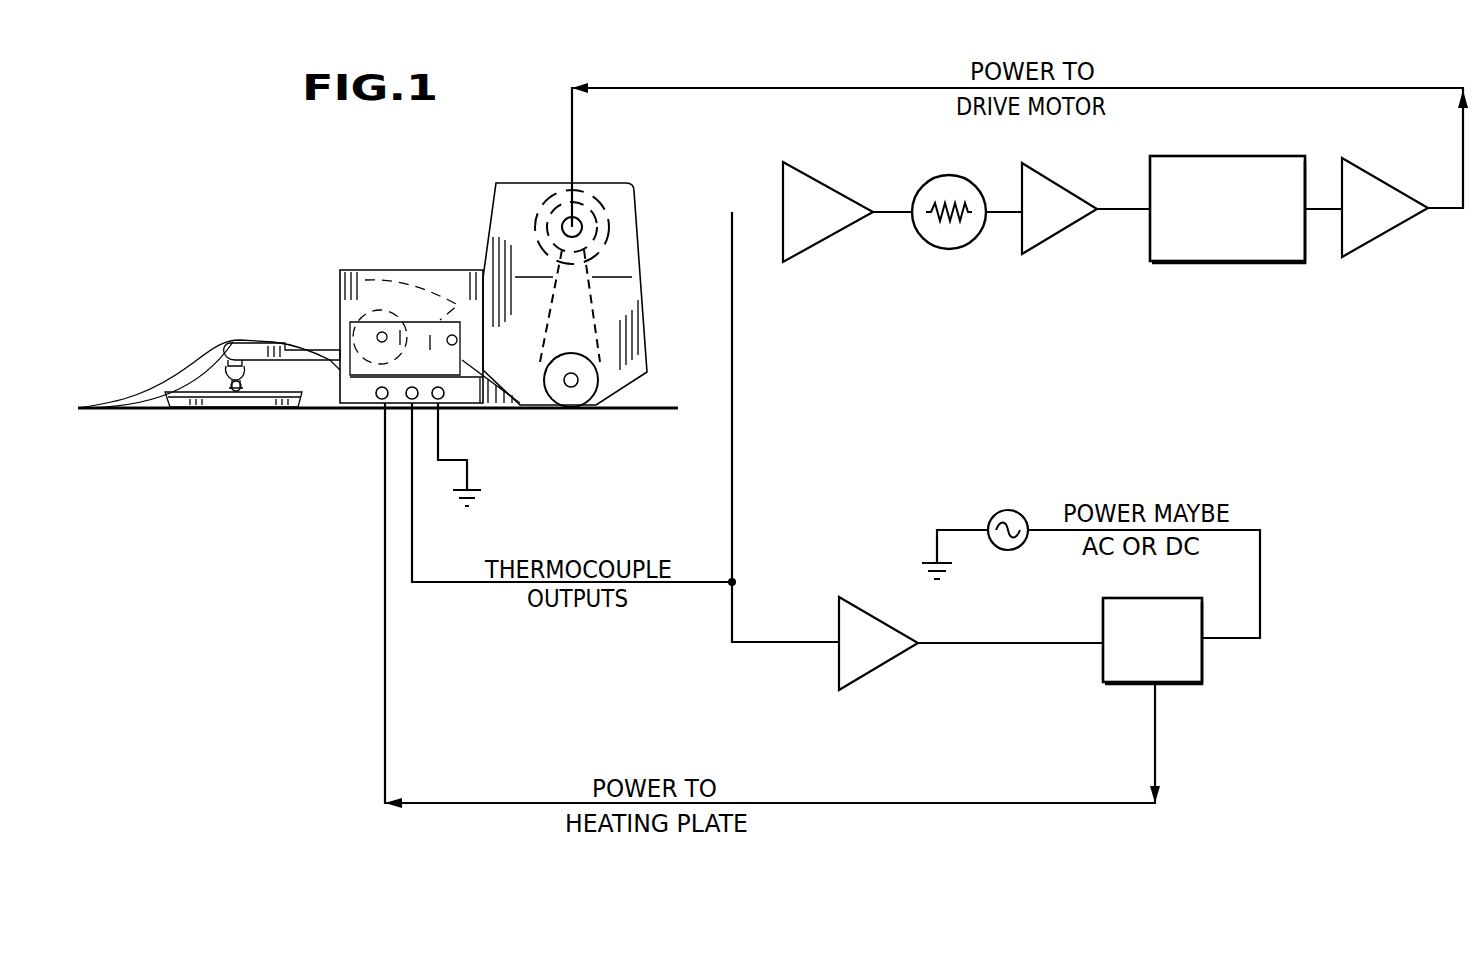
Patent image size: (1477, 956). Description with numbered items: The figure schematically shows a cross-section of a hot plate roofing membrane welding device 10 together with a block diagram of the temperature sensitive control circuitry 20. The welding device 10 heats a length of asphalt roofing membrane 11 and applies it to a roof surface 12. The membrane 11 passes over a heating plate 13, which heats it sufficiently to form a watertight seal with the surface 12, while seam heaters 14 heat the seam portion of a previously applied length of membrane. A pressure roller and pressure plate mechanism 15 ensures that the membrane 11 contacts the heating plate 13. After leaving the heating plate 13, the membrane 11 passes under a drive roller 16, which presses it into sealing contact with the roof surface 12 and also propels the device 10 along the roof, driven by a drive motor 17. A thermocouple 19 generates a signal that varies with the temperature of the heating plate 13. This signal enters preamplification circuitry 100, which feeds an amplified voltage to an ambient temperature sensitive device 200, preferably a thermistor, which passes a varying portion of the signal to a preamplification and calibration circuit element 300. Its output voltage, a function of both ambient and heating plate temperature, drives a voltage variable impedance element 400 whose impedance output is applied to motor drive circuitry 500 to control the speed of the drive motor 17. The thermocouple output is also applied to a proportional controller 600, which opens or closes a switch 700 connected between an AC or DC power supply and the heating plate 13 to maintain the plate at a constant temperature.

The hot plate roofing membrane welding device 10 is at (403, 248).
The roofing membrane 11 is at (175, 368).
The roof surface 12 is at (130, 412).
The heating plate 13 is at (477, 412).
The seam heaters 14 is at (215, 410).
The pressure roller and pressure plate mechanism 15 is at (333, 307).
The drive roller 16 is at (600, 383).
The drive motor 17 is at (600, 208).
The thermocouple 19 is at (410, 417).
The temperature sensitive control circuitry 20 is at (972, 324).
The preamplification circuitry 100 is at (823, 247).
The ambient temperature sensitive device 200 is at (948, 249).
The preamplification and calibration circuit element 300 is at (1062, 232).
The voltage variable impedance element 400 is at (1245, 262).
The motor drive circuitry 500 is at (1385, 235).
The proportional controller 600 is at (885, 662).
The switch 700 is at (1203, 670).